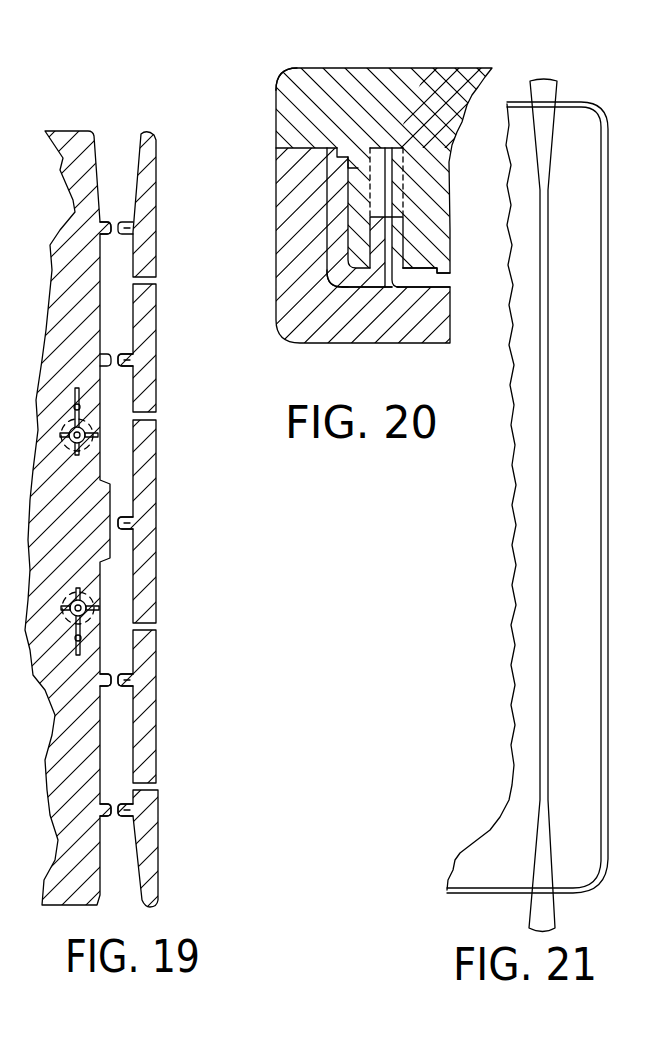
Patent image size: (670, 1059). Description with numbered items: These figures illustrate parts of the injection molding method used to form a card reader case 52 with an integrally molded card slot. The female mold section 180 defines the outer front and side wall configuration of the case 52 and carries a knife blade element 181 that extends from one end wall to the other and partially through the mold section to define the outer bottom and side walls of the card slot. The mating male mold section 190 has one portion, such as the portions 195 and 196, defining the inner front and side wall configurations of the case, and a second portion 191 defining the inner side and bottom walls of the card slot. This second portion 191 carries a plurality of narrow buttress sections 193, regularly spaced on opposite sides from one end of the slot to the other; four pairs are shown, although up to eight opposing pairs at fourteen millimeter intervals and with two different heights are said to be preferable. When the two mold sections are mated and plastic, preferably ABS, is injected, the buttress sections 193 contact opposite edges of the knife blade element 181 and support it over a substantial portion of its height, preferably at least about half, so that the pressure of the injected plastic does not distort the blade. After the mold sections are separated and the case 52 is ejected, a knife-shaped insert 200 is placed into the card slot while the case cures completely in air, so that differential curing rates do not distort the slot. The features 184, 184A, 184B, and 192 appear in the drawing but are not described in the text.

In FIG. 21, the case 52 is at (555, 458).
In FIG. 20, the female mold section 180 is at (276, 278).
In FIG. 20, the knife blade element 181 is at (397, 270).
In FIG. 20, the U-shaped clip 184 is at (383, 218).
In FIG. 20, the clip bottom 184A is at (387, 286).
In FIG. 20, the clip top shoulder 184B is at (385, 172).
In FIG. 19, the male mold section 190 is at (245, 703).
In FIG. 20, the male mold section 190 is at (377, 68).
In FIG. 19, the second portion 191 is at (124, 468).
In FIG. 20, the second portion 191 is at (335, 292).
In FIG. 19, the strip segment joint 192 is at (153, 628).
In FIG. 19, the buttress sections 193 is at (129, 228).
In FIG. 20, the buttress sections 193 is at (452, 70).
In FIG. 20, the portion 195 is at (357, 170).
In FIG. 20, the portion 196 is at (427, 273).
In FIG. 21, the knife-shaped insert 200 is at (538, 502).